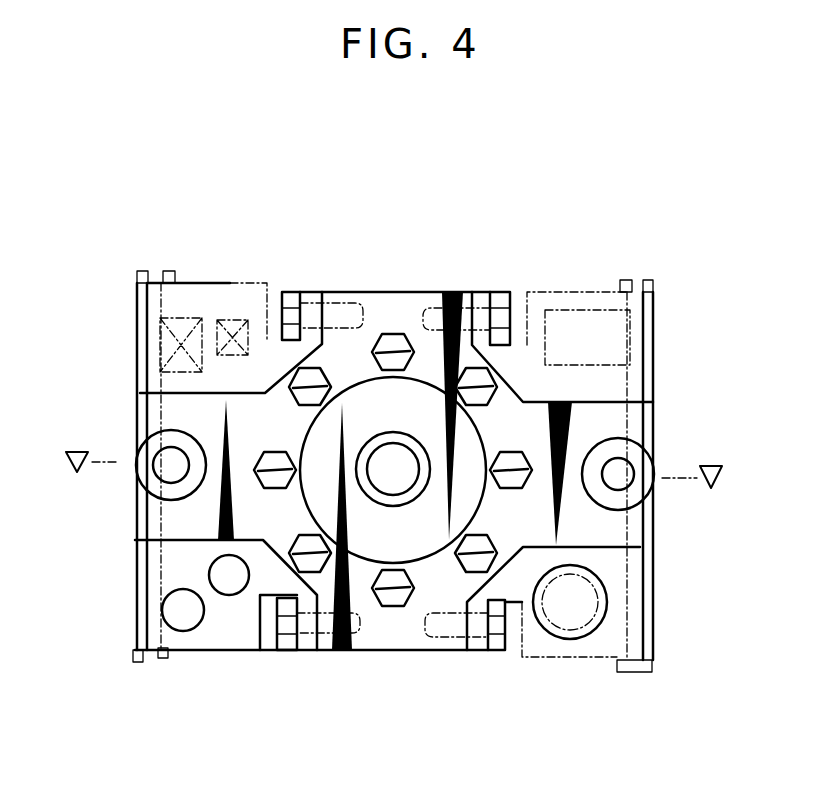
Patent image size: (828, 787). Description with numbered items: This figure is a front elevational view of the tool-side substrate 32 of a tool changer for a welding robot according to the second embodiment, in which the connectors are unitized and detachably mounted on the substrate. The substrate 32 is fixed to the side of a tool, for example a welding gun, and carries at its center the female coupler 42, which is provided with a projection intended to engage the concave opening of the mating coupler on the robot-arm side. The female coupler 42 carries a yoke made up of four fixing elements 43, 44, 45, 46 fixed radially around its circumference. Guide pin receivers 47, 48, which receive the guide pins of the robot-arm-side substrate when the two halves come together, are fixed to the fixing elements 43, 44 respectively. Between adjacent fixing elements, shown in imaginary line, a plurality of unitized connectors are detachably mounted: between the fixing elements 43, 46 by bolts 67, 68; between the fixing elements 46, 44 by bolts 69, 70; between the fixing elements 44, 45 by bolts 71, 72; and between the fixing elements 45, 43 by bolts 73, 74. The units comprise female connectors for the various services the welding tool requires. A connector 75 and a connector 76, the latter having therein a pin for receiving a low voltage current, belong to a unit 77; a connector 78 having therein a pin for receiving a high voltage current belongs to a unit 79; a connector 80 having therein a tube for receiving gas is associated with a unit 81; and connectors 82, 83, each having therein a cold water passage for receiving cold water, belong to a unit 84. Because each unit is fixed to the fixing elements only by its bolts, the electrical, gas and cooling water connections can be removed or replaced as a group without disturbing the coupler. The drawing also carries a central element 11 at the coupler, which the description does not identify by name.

The center shaft bore 11 is at (380, 497).
The substrate 32 is at (394, 414).
The female coupler 42 is at (456, 395).
The fixing element 43 is at (175, 510).
The fixing element 44 is at (630, 445).
The fixing element 45 is at (407, 305).
The fixing element 46 is at (412, 640).
The guide pin receiver 47 is at (160, 455).
The guide pin receiver 48 is at (650, 460).
The bolt 67 is at (286, 630).
The bolt 68 is at (137, 660).
The bolt 69 is at (497, 630).
The bolt 70 is at (630, 535).
The bolt 71 is at (637, 278).
The bolt 72 is at (507, 312).
The bolt 73 is at (288, 290).
The bolt 74 is at (141, 272).
The connector 75 is at (174, 320).
The connector 76 is at (231, 320).
The unit 77 is at (218, 372).
The connector 78 is at (585, 322).
The unit 79 is at (613, 377).
The connector 80 is at (572, 613).
The unit 81 is at (615, 577).
The connector 82 is at (184, 620).
The connector 83 is at (229, 585).
The unit 84 is at (180, 570).